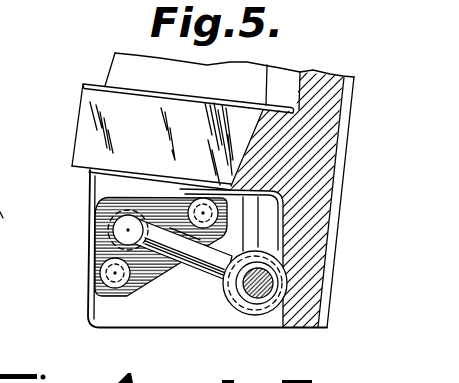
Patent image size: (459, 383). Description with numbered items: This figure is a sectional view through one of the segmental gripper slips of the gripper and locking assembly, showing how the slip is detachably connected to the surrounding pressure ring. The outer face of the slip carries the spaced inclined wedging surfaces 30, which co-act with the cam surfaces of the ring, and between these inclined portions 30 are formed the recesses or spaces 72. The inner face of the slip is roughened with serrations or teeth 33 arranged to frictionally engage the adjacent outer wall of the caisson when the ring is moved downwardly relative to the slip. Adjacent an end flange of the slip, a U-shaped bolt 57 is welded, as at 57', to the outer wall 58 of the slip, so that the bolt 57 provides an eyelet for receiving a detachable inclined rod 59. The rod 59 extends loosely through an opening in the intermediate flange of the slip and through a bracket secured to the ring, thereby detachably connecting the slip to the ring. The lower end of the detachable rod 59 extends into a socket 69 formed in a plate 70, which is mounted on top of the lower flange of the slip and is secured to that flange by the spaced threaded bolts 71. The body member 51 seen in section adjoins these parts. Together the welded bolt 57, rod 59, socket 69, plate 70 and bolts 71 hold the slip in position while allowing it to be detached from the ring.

The inclined surfaces 30 is at (115, 103).
The serrations or teeth 33 is at (335, 146).
The body member 51 is at (328, 95).
The U-shaped bolt 57 is at (234, 261).
The weld 57' is at (317, 258).
The outer wall 58 is at (283, 212).
The detachable inclined rod 59 is at (195, 260).
The socket 69 is at (110, 208).
The plate 70 is at (100, 250).
The threaded bolts 71 is at (188, 210).
The recesses or spaces 72 is at (157, 72).